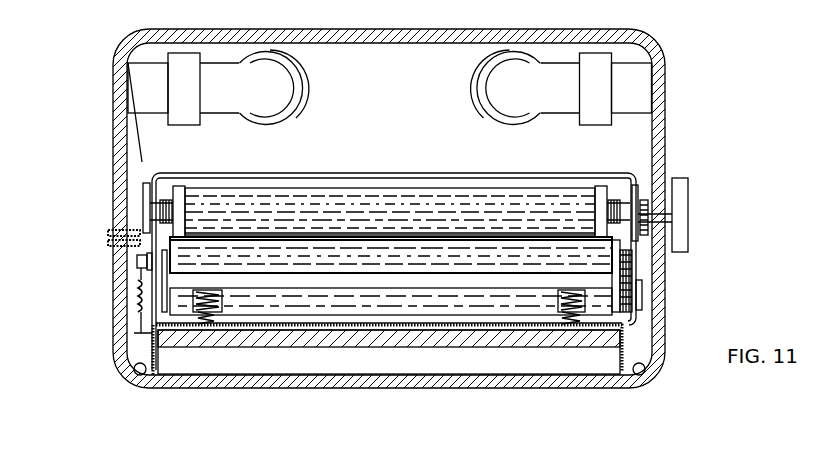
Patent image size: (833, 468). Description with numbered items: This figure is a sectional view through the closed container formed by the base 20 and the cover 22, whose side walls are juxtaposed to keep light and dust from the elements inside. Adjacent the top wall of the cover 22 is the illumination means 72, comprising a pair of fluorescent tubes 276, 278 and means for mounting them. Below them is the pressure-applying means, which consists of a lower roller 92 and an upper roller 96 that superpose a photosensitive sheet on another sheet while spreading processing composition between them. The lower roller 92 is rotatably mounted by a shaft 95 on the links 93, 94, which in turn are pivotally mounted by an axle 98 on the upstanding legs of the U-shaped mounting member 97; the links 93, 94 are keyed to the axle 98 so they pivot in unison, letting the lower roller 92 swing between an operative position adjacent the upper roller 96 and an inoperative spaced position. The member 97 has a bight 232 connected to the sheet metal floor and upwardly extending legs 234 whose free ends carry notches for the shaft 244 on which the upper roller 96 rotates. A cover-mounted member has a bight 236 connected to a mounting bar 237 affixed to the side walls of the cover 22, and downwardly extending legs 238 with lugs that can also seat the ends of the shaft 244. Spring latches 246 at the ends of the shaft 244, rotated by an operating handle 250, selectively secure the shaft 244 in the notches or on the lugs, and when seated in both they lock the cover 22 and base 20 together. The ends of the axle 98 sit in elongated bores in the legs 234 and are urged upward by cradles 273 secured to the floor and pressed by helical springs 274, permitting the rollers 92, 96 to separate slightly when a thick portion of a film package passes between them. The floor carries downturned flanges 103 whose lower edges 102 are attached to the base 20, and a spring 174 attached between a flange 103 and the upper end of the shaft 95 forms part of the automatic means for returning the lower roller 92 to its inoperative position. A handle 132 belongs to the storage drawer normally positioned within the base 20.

The base 20 is at (412, 389).
The cover 22 is at (626, 31).
The illumination means 72 is at (223, 57).
The lower roller 92 is at (482, 258).
The link 93 is at (618, 285).
The link 94 is at (168, 278).
The shaft 95 is at (372, 261).
The upper roller 96 is at (352, 192).
The U-shaped mounting member 97 is at (341, 317).
The axle 98 is at (413, 297).
The lower edges of flanges 102 is at (140, 362).
The downturned flanges 103 is at (627, 354).
The handle 132 is at (391, 368).
The spring 174 is at (137, 304).
The bight 232 is at (460, 323).
The upwardly extending legs 234 is at (153, 277).
The bight 236 is at (416, 170).
The mounting bar 237 is at (291, 170).
The downwardly extending legs 238 is at (147, 185).
The shaft 244 is at (225, 212).
The spring latches 246 is at (146, 187).
The operating handle 250 is at (683, 216).
The cradles 273 is at (223, 300).
The helical springs 274 is at (201, 322).
The fluorescent tube 276 is at (303, 72).
The fluorescent tube 278 is at (485, 72).